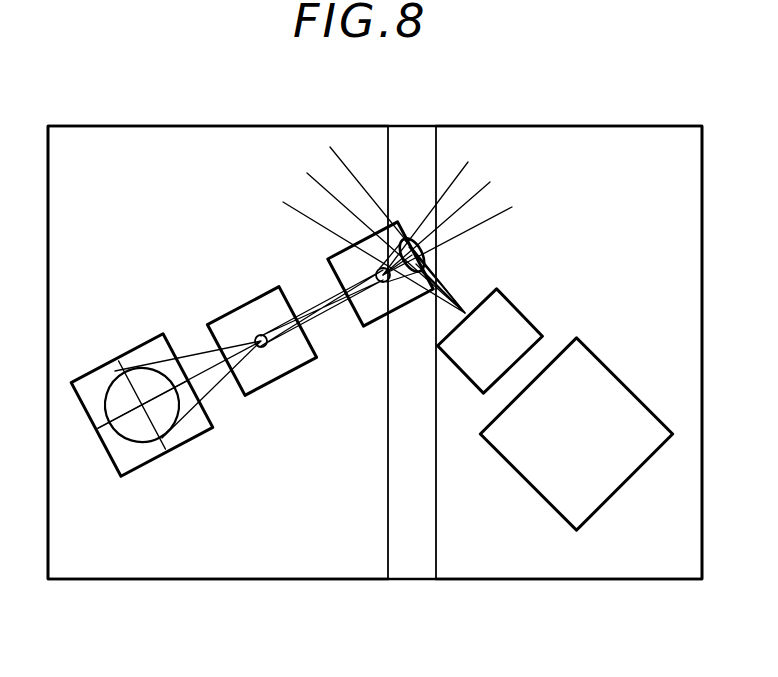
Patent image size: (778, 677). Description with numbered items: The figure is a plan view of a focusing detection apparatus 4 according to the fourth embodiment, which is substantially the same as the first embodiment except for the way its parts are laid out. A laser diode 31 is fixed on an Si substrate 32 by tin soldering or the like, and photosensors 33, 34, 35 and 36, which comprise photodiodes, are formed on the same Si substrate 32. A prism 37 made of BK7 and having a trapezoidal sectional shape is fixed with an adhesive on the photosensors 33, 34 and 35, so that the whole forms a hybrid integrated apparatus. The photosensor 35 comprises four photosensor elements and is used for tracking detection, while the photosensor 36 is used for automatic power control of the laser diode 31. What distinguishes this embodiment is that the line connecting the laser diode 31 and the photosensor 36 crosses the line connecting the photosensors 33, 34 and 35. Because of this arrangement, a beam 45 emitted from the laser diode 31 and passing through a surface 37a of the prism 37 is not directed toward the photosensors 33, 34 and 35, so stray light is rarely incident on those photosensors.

The focusing detection apparatus 4 is at (198, 116).
The laser diode 31 is at (478, 366).
The Si substrate 32 is at (543, 558).
The photosensor 33 is at (367, 310).
The photosensor 34 is at (270, 367).
The photosensor 35 is at (137, 457).
The photosensor 36 is at (617, 397).
The prism 37 is at (228, 550).
The surface 37a is at (413, 157).
The beam 45 is at (447, 285).